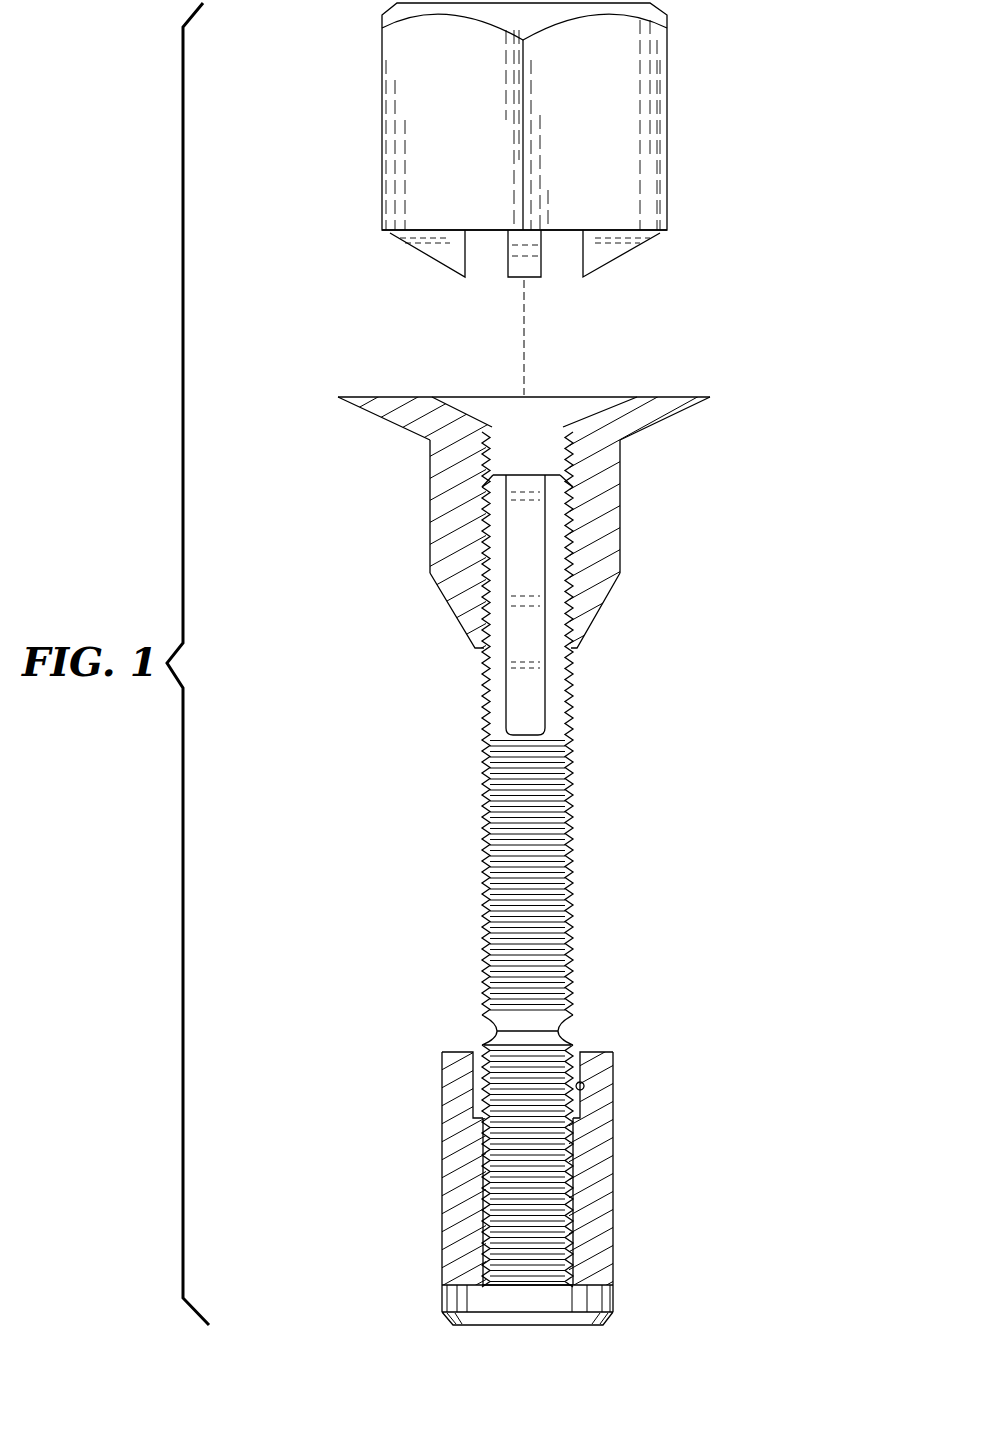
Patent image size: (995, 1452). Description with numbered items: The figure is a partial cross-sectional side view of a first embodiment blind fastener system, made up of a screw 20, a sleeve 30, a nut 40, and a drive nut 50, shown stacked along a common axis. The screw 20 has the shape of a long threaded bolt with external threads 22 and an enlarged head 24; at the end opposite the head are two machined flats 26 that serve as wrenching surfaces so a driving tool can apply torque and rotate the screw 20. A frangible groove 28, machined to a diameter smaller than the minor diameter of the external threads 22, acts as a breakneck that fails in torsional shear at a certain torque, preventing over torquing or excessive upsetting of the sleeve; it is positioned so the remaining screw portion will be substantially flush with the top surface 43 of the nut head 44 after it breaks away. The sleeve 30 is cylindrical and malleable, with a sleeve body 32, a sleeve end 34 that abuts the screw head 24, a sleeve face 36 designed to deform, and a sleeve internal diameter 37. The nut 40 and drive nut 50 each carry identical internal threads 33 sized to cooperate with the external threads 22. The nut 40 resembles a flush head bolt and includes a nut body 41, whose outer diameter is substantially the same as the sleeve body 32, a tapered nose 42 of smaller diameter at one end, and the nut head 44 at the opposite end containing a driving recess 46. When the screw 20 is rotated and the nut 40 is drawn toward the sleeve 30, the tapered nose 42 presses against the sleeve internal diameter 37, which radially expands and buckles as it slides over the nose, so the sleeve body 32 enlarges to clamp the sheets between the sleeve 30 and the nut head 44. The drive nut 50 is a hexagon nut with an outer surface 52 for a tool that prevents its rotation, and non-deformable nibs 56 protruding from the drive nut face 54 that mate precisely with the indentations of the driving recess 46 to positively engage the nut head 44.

The screw 20 is at (521, 888).
The external threads 22 is at (578, 873).
The enlarged head 24 is at (453, 1302).
The machined flats 26 is at (527, 655).
The frangible groove 28 is at (567, 1040).
The sleeve 30 is at (525, 1167).
The sleeve body 32 is at (588, 1228).
The internal threads 33 is at (483, 437).
The sleeve end 34 is at (590, 1292).
The sleeve face 36 is at (458, 1052).
The sleeve internal diameter 37 is at (583, 1090).
The nut 40 is at (548, 525).
The nut body 41 is at (597, 548).
The tapered nose 42 is at (602, 607).
The top surface 43 is at (402, 396).
The nut head 44 is at (410, 417).
The driving recess 46 is at (590, 402).
The drive nut 50 is at (523, 172).
The outer surface 52 is at (603, 175).
The drive nut face 54 is at (393, 232).
The nibs 56 is at (440, 246).